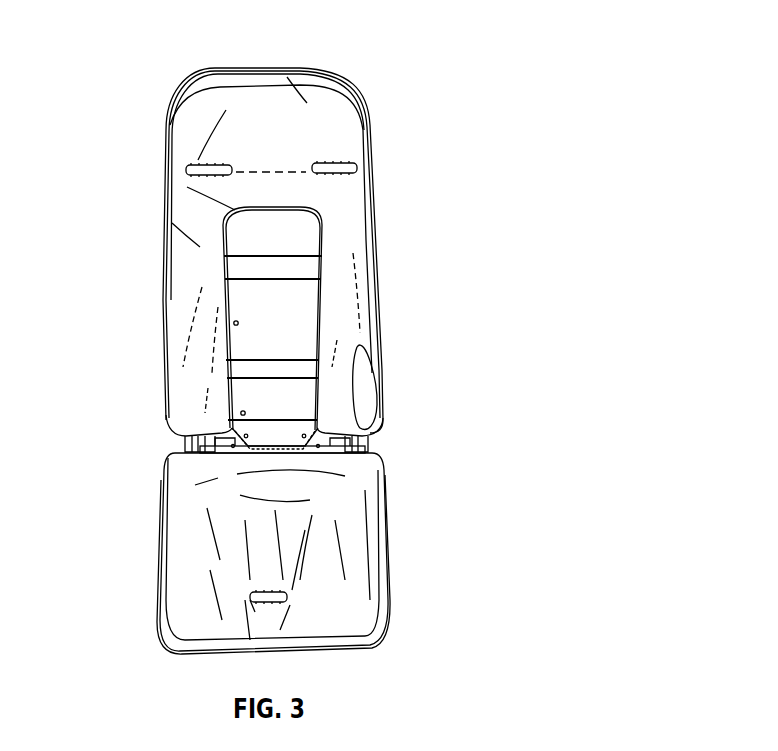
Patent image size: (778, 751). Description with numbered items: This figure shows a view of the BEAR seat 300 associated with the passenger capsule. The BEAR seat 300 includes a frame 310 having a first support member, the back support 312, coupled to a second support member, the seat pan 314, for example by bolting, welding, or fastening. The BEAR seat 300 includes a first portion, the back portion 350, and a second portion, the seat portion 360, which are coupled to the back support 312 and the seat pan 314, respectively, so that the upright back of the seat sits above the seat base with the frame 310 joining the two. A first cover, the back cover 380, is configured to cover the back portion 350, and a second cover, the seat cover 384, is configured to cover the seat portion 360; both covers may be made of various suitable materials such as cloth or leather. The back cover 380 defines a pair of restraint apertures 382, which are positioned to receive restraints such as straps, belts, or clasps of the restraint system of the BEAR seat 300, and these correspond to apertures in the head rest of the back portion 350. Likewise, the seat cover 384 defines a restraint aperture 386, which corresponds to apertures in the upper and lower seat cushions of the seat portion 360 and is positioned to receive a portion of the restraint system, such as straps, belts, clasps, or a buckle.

The BEAR seat 300 is at (370, 41).
The back portion 350 is at (119, 93).
The back cover 380 is at (265, 100).
The restraint apertures 382 is at (190, 166).
The back support 312 is at (293, 329).
The seat pan 314 is at (193, 433).
The frame 310 is at (358, 442).
The seat portion 360 is at (406, 583).
The seat cover 384 is at (178, 593).
The restraint aperture 386 is at (287, 597).